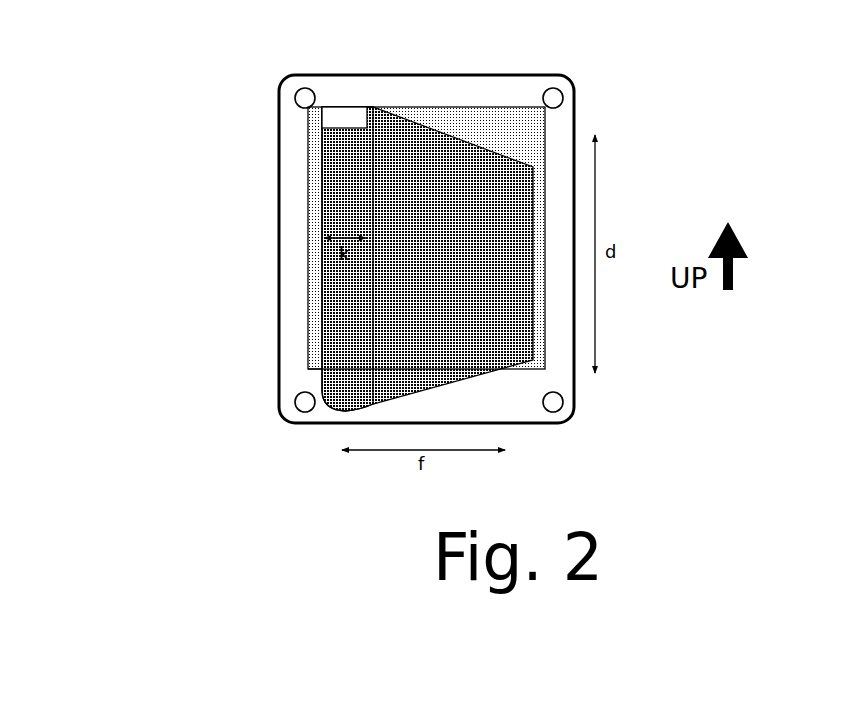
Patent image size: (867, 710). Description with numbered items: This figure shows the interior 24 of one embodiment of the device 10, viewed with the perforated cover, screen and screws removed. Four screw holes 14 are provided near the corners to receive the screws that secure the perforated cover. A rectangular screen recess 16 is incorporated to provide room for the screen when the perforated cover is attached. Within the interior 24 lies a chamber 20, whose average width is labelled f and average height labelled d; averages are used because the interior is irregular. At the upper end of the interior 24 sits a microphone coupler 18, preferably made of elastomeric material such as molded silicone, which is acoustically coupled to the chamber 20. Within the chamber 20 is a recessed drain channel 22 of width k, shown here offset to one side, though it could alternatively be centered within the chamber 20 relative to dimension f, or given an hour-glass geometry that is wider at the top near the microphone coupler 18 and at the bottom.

The display device 10 is at (87, 0).
The screw holes 14 is at (556, 93).
The screen recess 16 is at (503, 122).
The microphone coupler 18 is at (343, 115).
The chamber 20 is at (392, 207).
The recessed drain channel 22 is at (335, 325).
The interior 24 is at (298, 375).